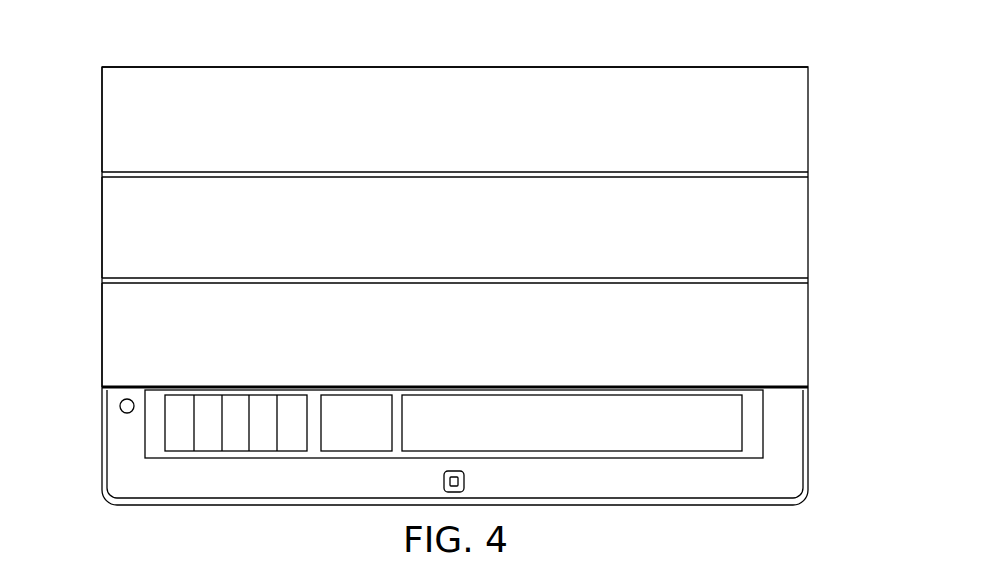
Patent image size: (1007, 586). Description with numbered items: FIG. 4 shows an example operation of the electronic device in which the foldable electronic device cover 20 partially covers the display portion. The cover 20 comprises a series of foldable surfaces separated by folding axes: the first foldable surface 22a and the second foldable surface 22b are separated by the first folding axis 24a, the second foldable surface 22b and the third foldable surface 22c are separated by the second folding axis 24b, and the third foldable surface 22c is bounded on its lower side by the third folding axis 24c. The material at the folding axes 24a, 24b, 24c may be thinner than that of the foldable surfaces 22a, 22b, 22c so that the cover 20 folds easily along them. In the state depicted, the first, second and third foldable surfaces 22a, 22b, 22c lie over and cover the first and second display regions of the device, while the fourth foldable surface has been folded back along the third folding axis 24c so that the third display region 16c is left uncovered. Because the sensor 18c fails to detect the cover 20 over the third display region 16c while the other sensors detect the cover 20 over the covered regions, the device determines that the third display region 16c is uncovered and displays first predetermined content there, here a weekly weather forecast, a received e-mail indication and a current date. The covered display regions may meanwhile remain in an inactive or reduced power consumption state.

The foldable electronic device cover 20 is at (591, 66).
The first foldable surface 22a is at (108, 116).
The second foldable surface 22b is at (108, 224).
The third foldable surface 22c is at (108, 346).
The first folding axis 24a is at (808, 173).
The second folding axis 24b is at (808, 283).
The third folding axis 24c is at (808, 387).
The third display region 16c is at (746, 428).
The sensor 18c is at (119, 412).